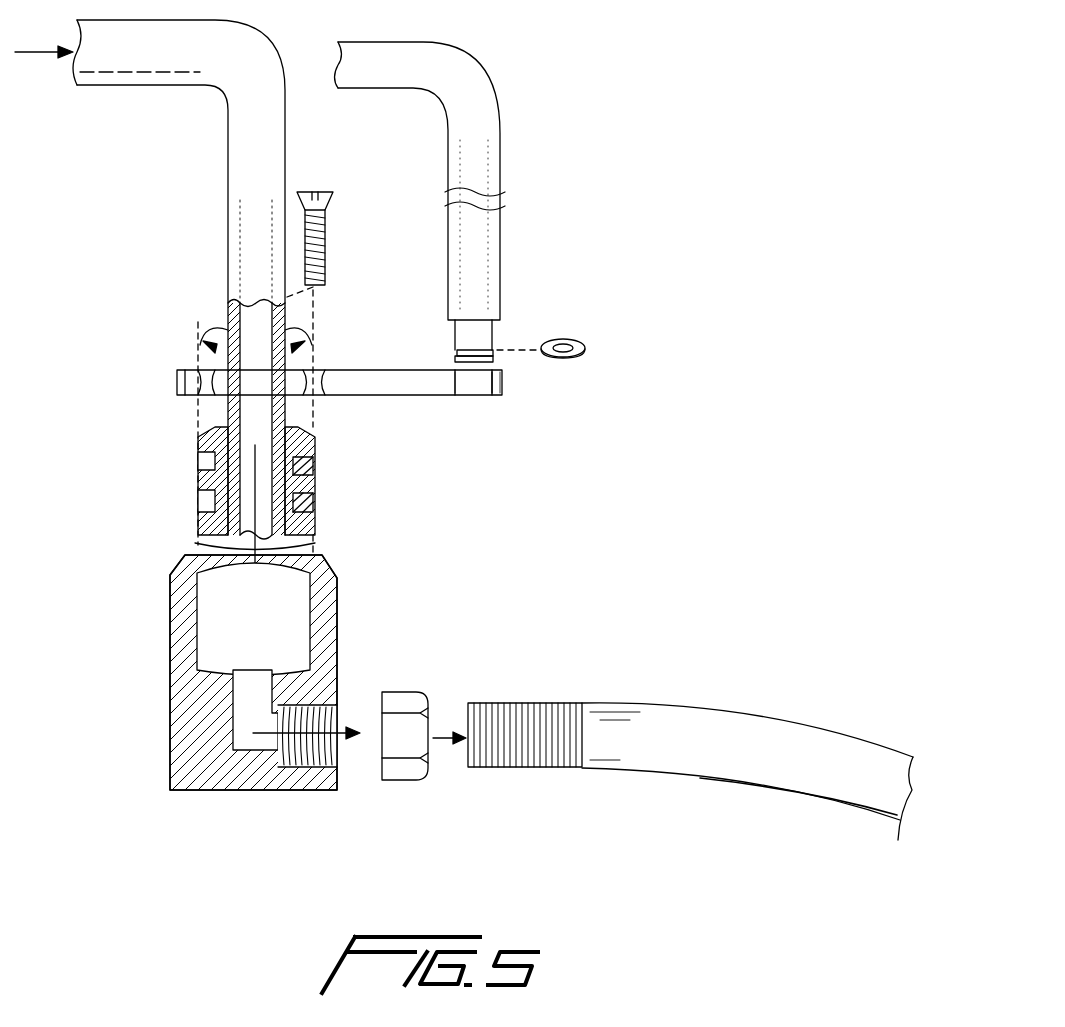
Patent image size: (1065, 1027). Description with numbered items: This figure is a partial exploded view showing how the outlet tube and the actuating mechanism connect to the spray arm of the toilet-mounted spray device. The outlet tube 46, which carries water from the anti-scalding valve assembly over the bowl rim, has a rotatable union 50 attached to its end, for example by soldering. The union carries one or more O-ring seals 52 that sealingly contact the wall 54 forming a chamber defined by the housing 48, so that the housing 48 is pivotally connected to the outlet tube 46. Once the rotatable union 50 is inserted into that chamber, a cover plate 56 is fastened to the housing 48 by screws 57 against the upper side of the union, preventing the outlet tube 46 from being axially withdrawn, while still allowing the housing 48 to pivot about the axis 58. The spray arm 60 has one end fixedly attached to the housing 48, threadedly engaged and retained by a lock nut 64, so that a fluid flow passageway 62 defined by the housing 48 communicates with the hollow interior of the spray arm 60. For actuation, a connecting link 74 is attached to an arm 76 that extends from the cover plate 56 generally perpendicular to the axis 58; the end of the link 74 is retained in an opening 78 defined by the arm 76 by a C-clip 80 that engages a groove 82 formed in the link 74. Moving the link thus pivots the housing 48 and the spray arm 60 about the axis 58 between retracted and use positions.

The outlet tube 46 is at (236, 118).
The housing 48 is at (207, 689).
The rotatable union 50 is at (200, 483).
The O-ring seals 52 is at (360, 515).
The wall 54 is at (213, 610).
The cover plate 56 is at (177, 382).
The screws 57 is at (318, 192).
The axis 58 is at (197, 545).
The spray arm 60 is at (688, 765).
The fluid flow passageway 62 is at (240, 682).
The lock nut 64 is at (397, 780).
The connecting link 74 is at (490, 100).
The arm 76 is at (412, 388).
The opening 78 is at (483, 388).
The C-clip 80 is at (576, 345).
The groove 82 is at (455, 350).